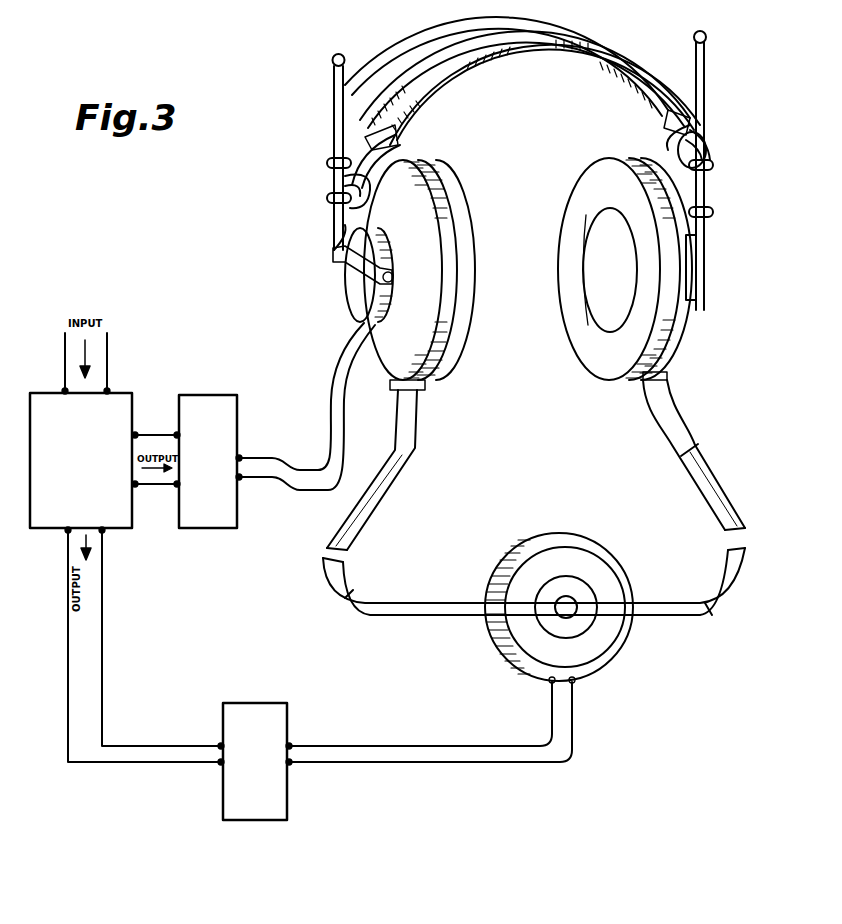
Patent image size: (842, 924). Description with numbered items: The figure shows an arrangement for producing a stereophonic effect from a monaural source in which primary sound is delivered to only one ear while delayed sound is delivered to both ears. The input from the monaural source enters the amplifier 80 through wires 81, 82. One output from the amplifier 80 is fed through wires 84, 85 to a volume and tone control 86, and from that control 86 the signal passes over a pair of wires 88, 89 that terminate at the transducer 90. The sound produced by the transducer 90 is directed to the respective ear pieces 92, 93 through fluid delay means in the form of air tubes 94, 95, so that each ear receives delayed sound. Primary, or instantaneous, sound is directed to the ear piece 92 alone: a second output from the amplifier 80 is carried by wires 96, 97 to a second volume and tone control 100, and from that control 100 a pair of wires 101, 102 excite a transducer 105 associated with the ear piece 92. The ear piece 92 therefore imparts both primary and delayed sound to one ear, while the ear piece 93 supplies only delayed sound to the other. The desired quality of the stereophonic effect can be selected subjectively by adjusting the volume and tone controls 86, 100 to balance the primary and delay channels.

The amplifier 80 is at (47, 517).
The wire 81 is at (65, 350).
The wire 82 is at (107, 360).
The wire 84 is at (103, 762).
The wire 85 is at (102, 715).
The volume and tone control 86 is at (243, 813).
The wire 88 is at (390, 747).
The wire 89 is at (410, 764).
The transducer 90 is at (625, 650).
The ear piece 92 is at (432, 158).
The ear piece 93 is at (590, 175).
The air tube 94 is at (410, 470).
The air tube 95 is at (680, 437).
The wire 96 is at (158, 486).
The wire 97 is at (153, 435).
The volume and tone control 100 is at (223, 400).
The wire 101 is at (268, 480).
The wire 102 is at (275, 458).
The transducer 105 is at (352, 284).